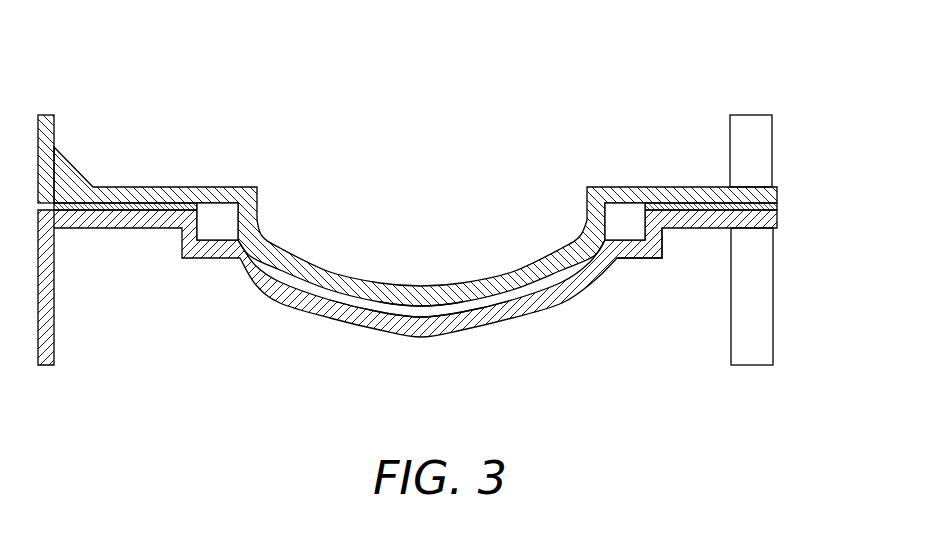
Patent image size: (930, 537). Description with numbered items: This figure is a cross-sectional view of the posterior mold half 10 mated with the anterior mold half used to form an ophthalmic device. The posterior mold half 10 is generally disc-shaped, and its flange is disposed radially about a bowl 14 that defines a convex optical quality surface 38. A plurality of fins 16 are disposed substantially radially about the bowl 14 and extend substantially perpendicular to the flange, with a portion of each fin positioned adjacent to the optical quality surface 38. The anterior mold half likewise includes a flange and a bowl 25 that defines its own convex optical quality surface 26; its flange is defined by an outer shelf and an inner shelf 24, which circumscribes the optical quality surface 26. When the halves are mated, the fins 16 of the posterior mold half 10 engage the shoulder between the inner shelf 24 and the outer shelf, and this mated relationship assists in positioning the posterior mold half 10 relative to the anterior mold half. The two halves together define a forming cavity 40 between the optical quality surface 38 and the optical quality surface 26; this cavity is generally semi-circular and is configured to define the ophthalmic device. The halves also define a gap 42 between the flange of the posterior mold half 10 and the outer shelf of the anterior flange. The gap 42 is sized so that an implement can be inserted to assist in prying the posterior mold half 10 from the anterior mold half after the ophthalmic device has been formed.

The posterior mold half 10 is at (435, 215).
The bowl 14 is at (479, 264).
The fins 16 is at (218, 222).
The inner shelf 24 is at (623, 242).
The bowl 25 is at (395, 343).
The optical quality surface 26 is at (496, 305).
The optical quality surface 38 is at (399, 306).
The forming cavity 40 is at (380, 308).
The gap 42 is at (748, 206).